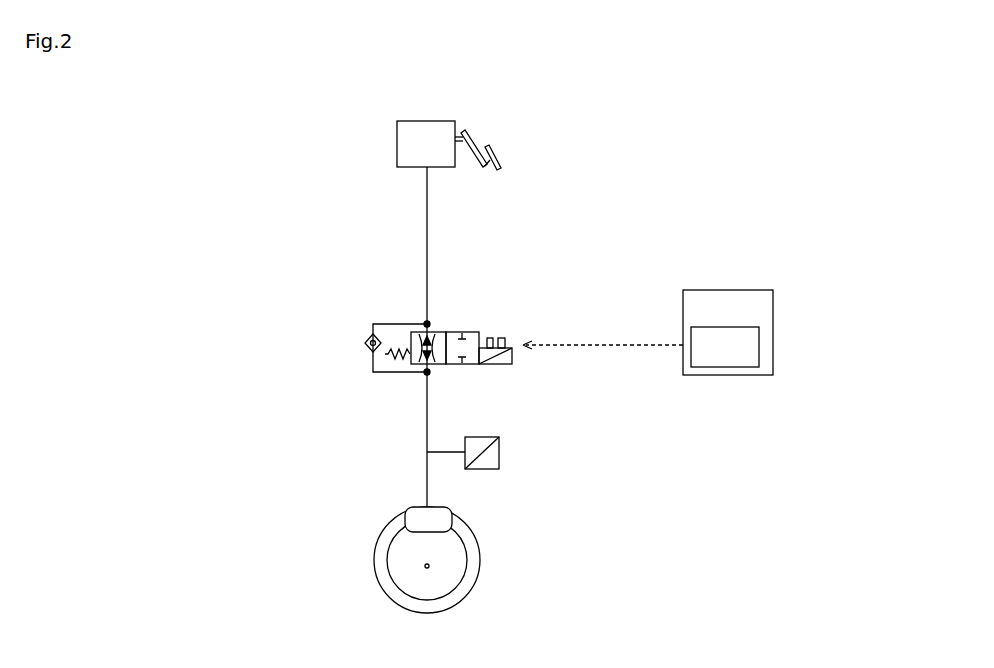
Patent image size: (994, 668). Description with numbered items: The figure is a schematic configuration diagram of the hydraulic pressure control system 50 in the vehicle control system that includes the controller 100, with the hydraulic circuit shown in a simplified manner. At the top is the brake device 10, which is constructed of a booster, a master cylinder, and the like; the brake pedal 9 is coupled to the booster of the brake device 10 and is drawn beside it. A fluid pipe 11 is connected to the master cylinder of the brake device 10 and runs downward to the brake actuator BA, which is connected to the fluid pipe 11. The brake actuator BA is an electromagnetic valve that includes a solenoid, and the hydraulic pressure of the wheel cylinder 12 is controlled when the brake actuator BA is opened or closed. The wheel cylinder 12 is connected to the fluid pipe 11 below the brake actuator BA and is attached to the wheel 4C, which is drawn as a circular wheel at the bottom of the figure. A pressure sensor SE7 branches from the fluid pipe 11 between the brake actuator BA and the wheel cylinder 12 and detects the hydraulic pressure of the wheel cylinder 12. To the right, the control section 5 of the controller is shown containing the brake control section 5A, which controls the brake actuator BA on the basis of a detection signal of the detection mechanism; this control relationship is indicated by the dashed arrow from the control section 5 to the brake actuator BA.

The controller 100 is at (718, 148).
The hydraulic pressure control system 50 is at (517, 247).
The brake device 10 is at (440, 168).
The brake pedal 9 is at (491, 172).
The fluid pipe 11 is at (427, 263).
The brake actuator BA is at (470, 364).
The control section 5 is at (773, 290).
The brake control section 5A is at (759, 340).
The pressure sensor SE7 is at (499, 437).
The wheel 4C is at (392, 523).
The wheel cylinder 12 is at (450, 513).